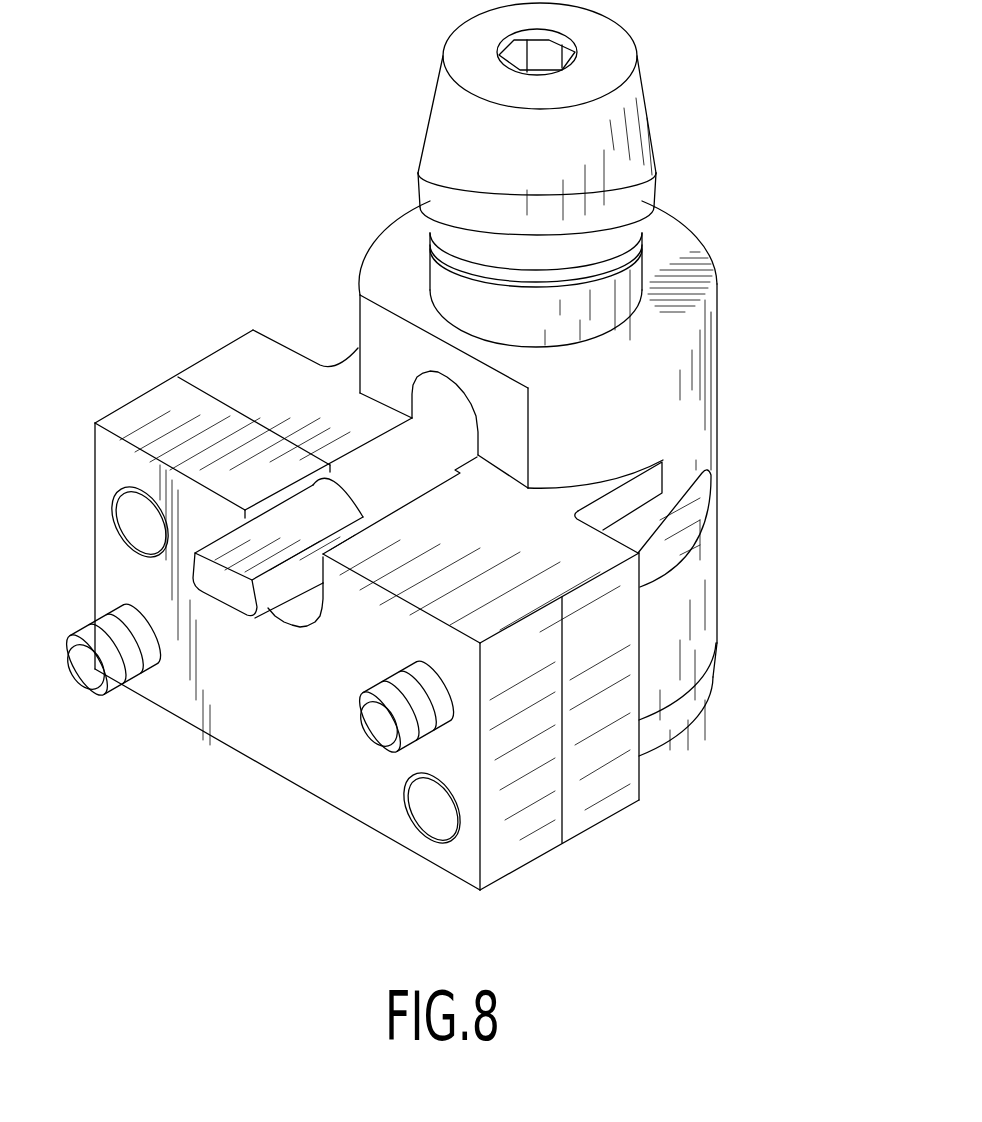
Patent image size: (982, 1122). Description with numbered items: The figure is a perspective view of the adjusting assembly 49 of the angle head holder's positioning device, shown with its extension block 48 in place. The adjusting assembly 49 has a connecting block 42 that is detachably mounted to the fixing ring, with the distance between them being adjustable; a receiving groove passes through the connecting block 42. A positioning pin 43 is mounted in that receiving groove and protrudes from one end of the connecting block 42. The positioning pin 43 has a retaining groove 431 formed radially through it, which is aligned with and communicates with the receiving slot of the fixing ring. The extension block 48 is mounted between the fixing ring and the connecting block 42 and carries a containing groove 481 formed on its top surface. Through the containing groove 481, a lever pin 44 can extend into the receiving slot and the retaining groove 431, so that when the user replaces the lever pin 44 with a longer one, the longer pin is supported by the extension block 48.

The connecting block 42 is at (729, 356).
The positioning pin 43 is at (397, 144).
The retaining groove 431 is at (404, 390).
The lever pin 44 is at (350, 463).
The extension block 48 is at (281, 812).
The containing groove 481 is at (308, 612).
The adjusting assembly 49 is at (746, 650).